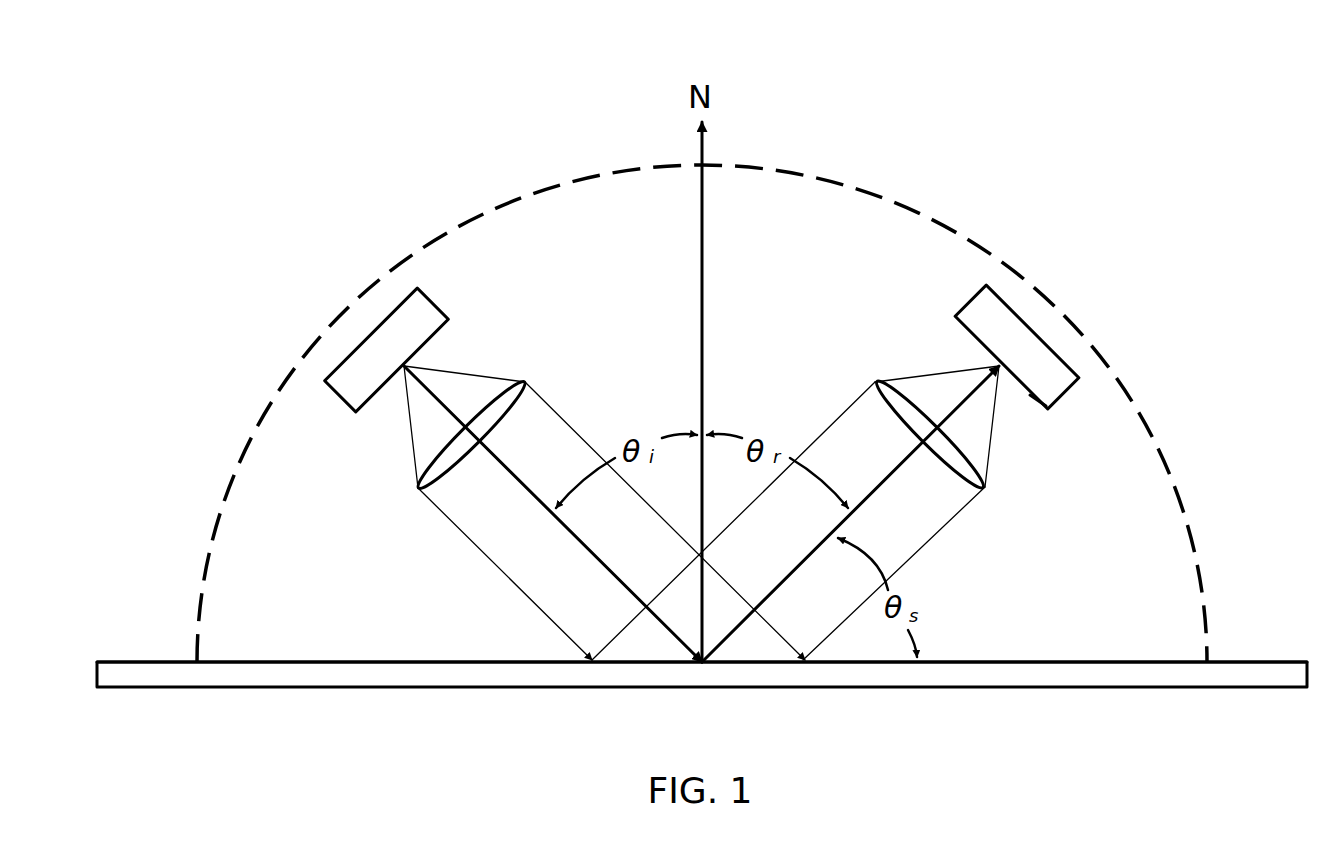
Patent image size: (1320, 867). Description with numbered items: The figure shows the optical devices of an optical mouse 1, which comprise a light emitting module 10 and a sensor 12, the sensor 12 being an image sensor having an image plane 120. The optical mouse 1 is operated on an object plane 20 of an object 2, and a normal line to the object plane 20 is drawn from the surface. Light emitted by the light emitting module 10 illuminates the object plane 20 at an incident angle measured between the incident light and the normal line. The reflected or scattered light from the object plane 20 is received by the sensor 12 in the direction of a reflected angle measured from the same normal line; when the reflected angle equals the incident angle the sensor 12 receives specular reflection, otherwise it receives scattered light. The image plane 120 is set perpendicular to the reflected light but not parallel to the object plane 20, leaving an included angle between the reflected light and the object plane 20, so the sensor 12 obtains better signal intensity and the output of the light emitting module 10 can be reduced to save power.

The optical mouse 1 is at (519, 197).
The object 2 is at (272, 677).
The object plane 20 is at (160, 661).
The light emitting module 10 is at (366, 335).
The sensor 12 is at (1036, 330).
The image plane 120 is at (1027, 397).